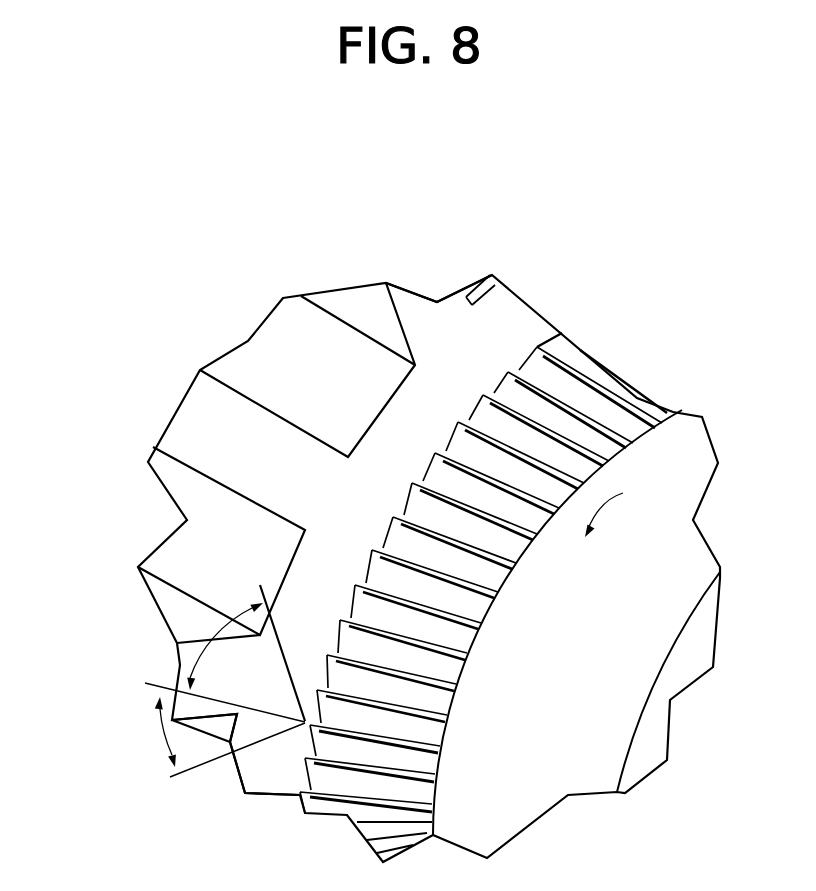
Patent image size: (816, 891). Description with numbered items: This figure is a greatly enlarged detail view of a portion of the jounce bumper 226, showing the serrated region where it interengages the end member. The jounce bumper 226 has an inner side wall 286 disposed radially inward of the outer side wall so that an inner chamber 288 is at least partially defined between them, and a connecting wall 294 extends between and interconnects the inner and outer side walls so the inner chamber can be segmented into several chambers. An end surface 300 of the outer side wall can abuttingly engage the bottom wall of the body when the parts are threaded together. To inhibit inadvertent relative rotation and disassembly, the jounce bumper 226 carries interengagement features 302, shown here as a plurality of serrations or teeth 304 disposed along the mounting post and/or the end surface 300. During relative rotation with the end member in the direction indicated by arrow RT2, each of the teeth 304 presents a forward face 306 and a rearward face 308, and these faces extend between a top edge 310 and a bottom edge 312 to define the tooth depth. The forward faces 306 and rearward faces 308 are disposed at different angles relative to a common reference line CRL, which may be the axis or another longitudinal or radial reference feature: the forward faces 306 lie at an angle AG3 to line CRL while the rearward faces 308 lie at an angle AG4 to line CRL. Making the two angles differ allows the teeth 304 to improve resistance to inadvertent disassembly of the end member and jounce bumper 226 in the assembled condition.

The jounce bumper 226 is at (565, 290).
The inner side wall 286 is at (282, 315).
The connecting wall 294 is at (398, 298).
The interengagement feature 302 is at (493, 311).
The inner chamber 288 is at (195, 485).
The end surface 300 is at (258, 780).
The common reference line CRL is at (155, 684).
The angle AG4 is at (158, 737).
The angle AG3 is at (217, 632).
The teeth 304 is at (420, 452).
The forward face 306 is at (364, 558).
The top edge 310 is at (433, 645).
The bottom edge 312 is at (443, 717).
The rearward face 308 is at (342, 765).
The direction of relative rotation RT2 is at (620, 496).